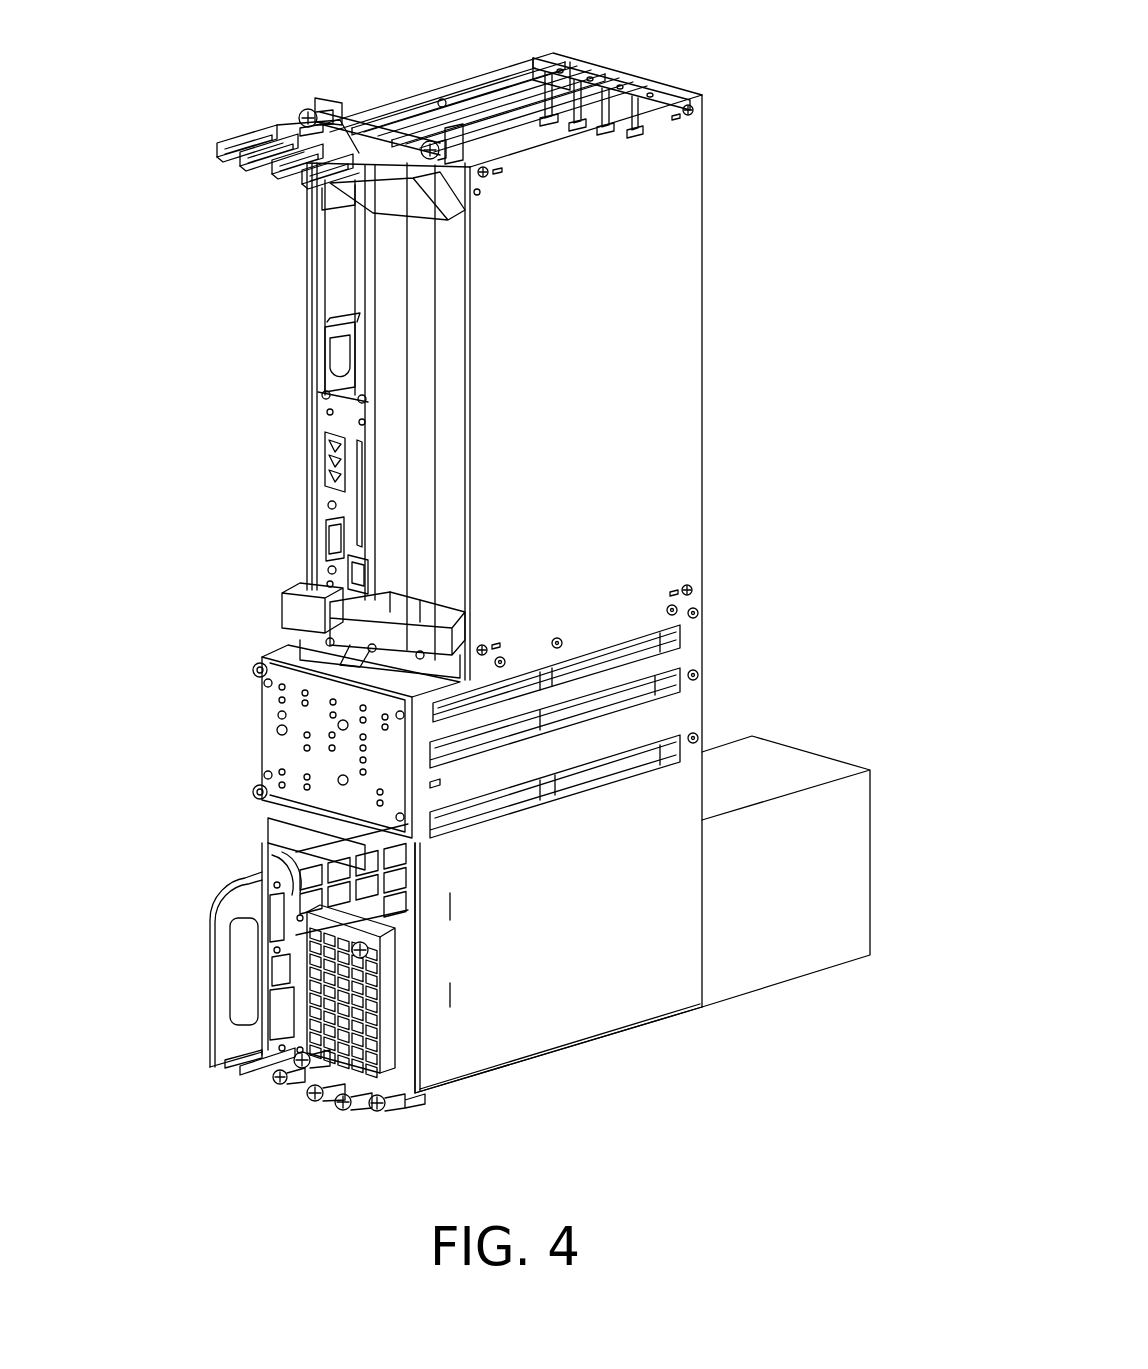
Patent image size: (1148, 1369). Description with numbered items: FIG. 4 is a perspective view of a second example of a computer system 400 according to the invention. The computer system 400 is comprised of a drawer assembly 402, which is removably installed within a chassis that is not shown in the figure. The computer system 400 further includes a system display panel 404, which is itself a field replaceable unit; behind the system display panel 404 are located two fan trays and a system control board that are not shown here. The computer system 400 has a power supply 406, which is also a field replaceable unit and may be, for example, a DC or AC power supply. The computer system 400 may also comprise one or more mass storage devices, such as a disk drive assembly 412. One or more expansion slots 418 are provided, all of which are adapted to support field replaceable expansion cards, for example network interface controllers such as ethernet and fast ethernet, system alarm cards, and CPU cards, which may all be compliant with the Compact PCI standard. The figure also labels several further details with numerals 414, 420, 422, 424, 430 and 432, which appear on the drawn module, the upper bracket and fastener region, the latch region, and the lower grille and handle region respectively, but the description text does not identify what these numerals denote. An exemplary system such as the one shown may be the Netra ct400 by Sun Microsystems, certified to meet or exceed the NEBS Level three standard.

The computer system 400 is at (737, 110).
The drawer assembly 402 is at (610, 992).
The system display panel 404 is at (290, 752).
The power supply 406 is at (333, 1053).
The disk drive assembly 412 is at (338, 255).
The input/output connectors 414 is at (338, 423).
The expansion slots 418 is at (393, 307).
The comb bracket 420 is at (246, 128).
The thumb screw 422 is at (332, 97).
The latch blocks 424 is at (345, 640).
The vent grille 430 is at (298, 930).
The handle 432 is at (232, 1040).